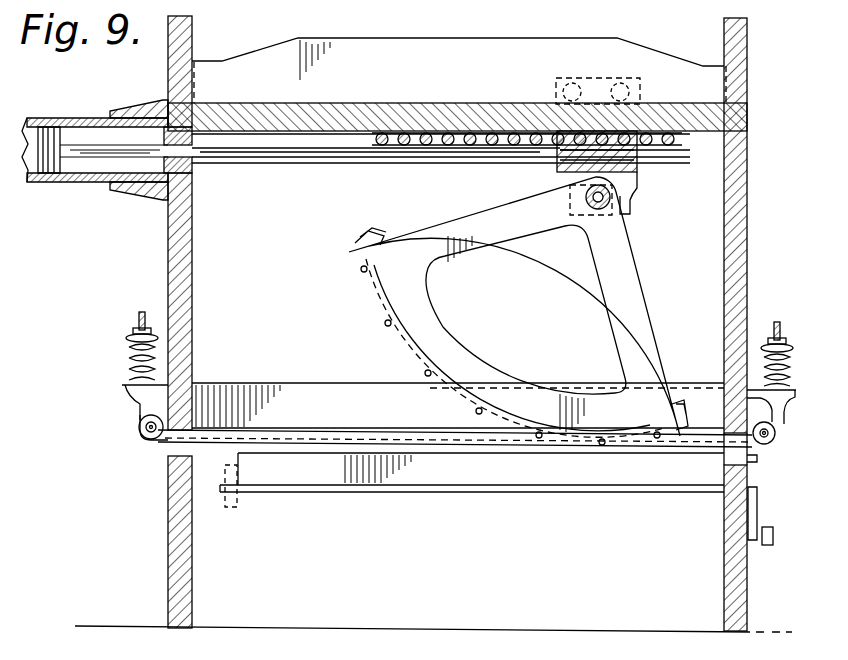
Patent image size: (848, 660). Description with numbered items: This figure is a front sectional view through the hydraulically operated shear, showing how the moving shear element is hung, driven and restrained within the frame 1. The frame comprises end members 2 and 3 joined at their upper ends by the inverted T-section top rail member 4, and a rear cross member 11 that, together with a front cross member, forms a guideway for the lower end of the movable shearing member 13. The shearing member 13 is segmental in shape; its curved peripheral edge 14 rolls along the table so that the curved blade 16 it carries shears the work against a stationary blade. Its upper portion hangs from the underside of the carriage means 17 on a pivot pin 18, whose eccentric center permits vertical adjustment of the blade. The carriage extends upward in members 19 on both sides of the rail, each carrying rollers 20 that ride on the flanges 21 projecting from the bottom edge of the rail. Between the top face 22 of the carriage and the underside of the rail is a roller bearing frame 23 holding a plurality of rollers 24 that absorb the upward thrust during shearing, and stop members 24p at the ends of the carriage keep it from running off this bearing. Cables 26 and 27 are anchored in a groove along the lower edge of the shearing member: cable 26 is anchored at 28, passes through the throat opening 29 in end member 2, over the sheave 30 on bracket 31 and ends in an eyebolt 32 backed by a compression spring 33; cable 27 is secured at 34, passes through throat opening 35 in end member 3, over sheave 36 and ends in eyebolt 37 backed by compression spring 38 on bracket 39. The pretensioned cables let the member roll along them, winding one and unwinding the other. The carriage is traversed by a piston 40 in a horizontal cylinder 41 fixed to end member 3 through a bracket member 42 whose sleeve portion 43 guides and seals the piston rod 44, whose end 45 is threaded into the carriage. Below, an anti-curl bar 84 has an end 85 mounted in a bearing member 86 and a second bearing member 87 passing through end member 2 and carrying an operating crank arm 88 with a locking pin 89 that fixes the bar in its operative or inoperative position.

The frame 1 is at (382, 38).
The end member 2 is at (749, 233).
The end member 3 is at (167, 262).
The top rail member 4 is at (462, 40).
The rear cross member 11 is at (316, 384).
The movable shearing member 13 is at (636, 273).
The curved peripheral edge 14 is at (362, 300).
The curved blade 16 is at (378, 310).
The carriage means 17 is at (626, 203).
The pivot pin 18 is at (586, 210).
The carriage member 19 is at (642, 82).
The roller 20 is at (614, 80).
The flange 21 is at (238, 103).
The top face of carriage 22 is at (556, 162).
The roller bearing frame 23 is at (455, 150).
The roller 24 is at (426, 146).
The stop member 24p is at (372, 134).
The cable 26 is at (702, 450).
The cable 27 is at (370, 438).
The cable anchor point 28 is at (366, 230).
The throat opening 29 is at (749, 462).
The sheave 30 is at (768, 445).
The bracket 31 is at (756, 390).
The eyebolt 32 is at (780, 322).
The compression spring 33 is at (768, 366).
The cable securing point 34 is at (686, 410).
The throat opening 35 is at (170, 454).
The sheave 36 is at (139, 432).
The eyebolt 37 is at (136, 318).
The compression spring 38 is at (128, 358).
The bracket 39 is at (128, 392).
The piston 40 is at (52, 182).
The cylinder 41 is at (60, 117).
The bracket member 42 is at (136, 105).
The sleeve portion 43 is at (192, 172).
The piston rod 44 is at (246, 160).
The piston rod end 45 is at (640, 162).
The bar 84 is at (460, 494).
The bar end 85 is at (226, 510).
The bearing member 86 is at (240, 510).
The second bearing member 87 is at (724, 522).
The operating crank arm 88 is at (757, 510).
The locking pin 89 is at (768, 546).